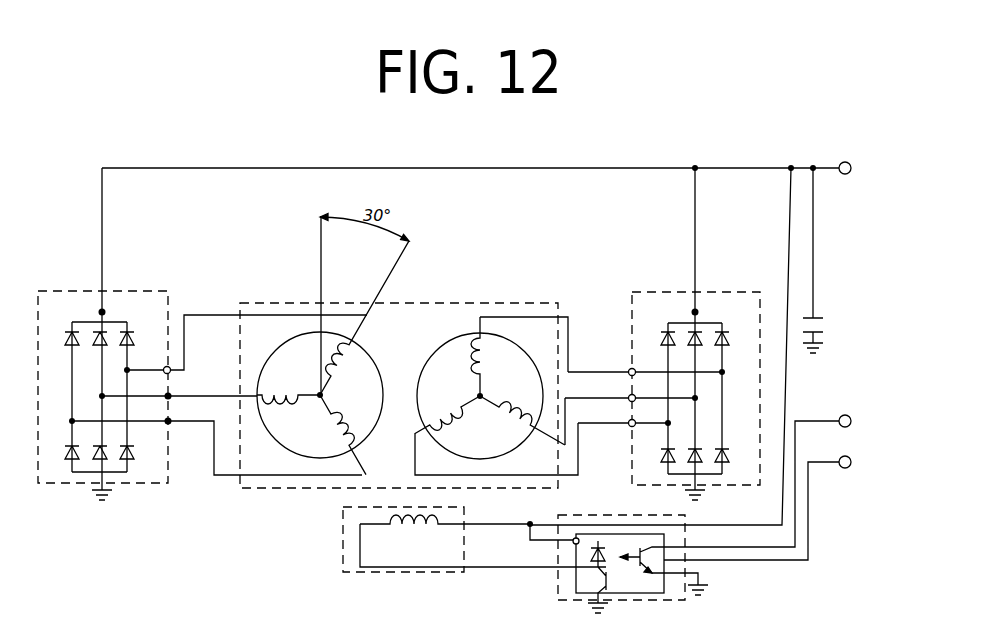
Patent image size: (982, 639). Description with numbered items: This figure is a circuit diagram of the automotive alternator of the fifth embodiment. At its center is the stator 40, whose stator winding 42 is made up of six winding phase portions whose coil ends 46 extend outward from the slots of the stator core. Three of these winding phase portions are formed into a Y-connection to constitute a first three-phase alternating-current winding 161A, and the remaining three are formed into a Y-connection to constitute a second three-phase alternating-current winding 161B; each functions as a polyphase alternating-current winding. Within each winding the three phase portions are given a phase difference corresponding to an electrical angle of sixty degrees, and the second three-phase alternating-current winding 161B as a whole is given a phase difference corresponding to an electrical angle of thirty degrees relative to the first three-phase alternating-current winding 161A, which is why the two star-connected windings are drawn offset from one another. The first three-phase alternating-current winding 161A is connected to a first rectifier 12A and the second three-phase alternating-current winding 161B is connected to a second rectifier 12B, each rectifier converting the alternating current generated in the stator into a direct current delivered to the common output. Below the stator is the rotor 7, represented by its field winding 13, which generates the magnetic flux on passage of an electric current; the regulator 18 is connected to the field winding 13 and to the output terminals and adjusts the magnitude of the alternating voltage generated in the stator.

The first rectifier 12A is at (653, 289).
The second rectifier 12B is at (153, 289).
The stator 40 is at (470, 303).
The stator winding 42 is at (413, 350).
The coil ends 46 is at (432, 414).
The first three-phase alternating-current winding 161A is at (527, 353).
The second three-phase alternating-current winding 161B is at (308, 457).
The rotor 7 is at (446, 564).
The field winding 13 is at (411, 540).
The regulator 18 is at (562, 585).